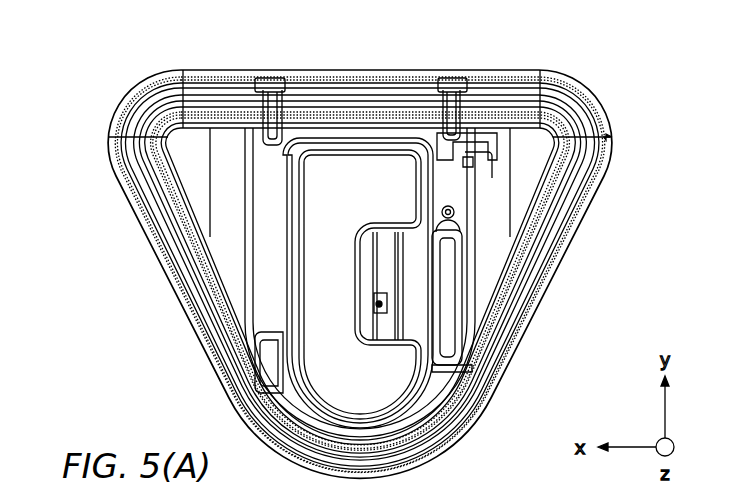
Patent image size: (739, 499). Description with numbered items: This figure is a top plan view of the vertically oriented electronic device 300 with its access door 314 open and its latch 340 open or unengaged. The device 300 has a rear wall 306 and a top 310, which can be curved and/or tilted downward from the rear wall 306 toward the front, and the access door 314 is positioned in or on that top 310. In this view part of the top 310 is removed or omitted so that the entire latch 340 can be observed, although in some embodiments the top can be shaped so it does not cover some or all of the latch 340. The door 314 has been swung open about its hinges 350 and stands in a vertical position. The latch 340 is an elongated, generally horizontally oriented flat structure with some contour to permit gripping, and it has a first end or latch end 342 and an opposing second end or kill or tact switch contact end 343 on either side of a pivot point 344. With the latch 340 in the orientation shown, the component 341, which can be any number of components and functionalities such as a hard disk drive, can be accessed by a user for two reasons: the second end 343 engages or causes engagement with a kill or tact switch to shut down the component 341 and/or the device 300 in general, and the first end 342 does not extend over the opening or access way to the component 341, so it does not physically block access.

The vertically oriented electronic device 300 is at (363, 249).
The rear wall 306 is at (360, 247).
The top 310 is at (213, 218).
The access door 314 is at (287, 80).
The latch 340 is at (467, 288).
The component 341 is at (381, 404).
The first end or latch end 342 is at (472, 372).
The second end or kill or tact switch contact end 343 is at (440, 133).
The pivot point 344 is at (455, 213).
The hinges 350 is at (265, 97).